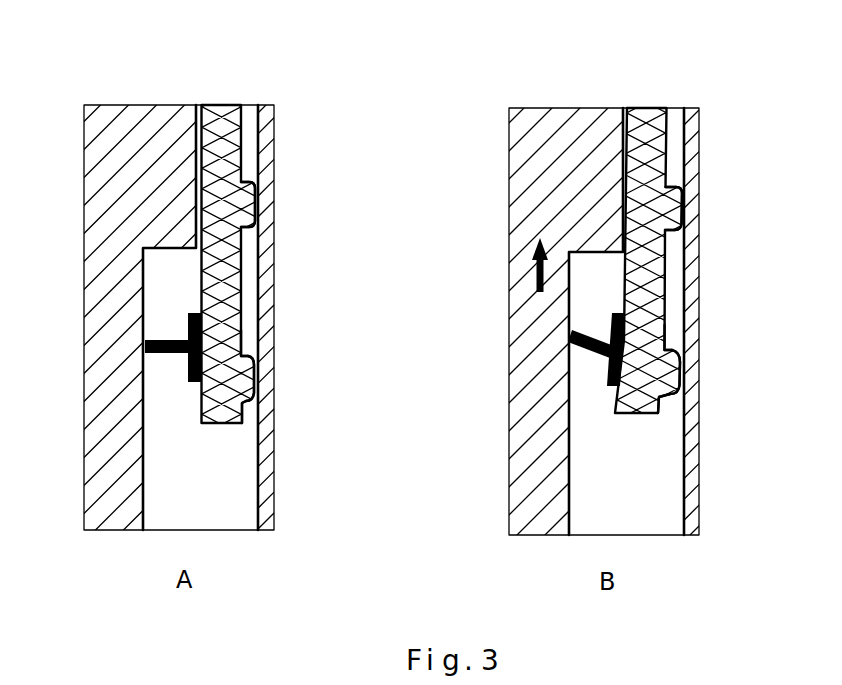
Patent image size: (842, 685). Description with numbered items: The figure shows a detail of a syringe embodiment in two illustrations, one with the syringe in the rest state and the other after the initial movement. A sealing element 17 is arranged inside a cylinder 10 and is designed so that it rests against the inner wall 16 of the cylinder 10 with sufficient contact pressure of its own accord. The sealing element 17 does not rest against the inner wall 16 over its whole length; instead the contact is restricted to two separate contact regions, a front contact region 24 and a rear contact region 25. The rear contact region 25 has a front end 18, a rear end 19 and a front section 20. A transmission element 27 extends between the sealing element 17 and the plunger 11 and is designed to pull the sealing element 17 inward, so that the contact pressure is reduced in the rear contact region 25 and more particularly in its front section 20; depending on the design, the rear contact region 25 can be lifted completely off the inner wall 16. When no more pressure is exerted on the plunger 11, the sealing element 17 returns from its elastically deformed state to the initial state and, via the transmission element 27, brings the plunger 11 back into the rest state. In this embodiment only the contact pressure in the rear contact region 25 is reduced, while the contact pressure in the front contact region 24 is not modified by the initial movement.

The cylinder 10 is at (263, 463).
The plunger 11 is at (122, 172).
The inner wall 16 is at (259, 507).
The sealing element 17 is at (214, 112).
The front end 18 is at (243, 362).
The rear end 19 is at (262, 412).
The front section 20 is at (258, 347).
The front contact region 24 is at (267, 195).
The rear contact region 25 is at (258, 377).
The transmission element 27 is at (170, 353).